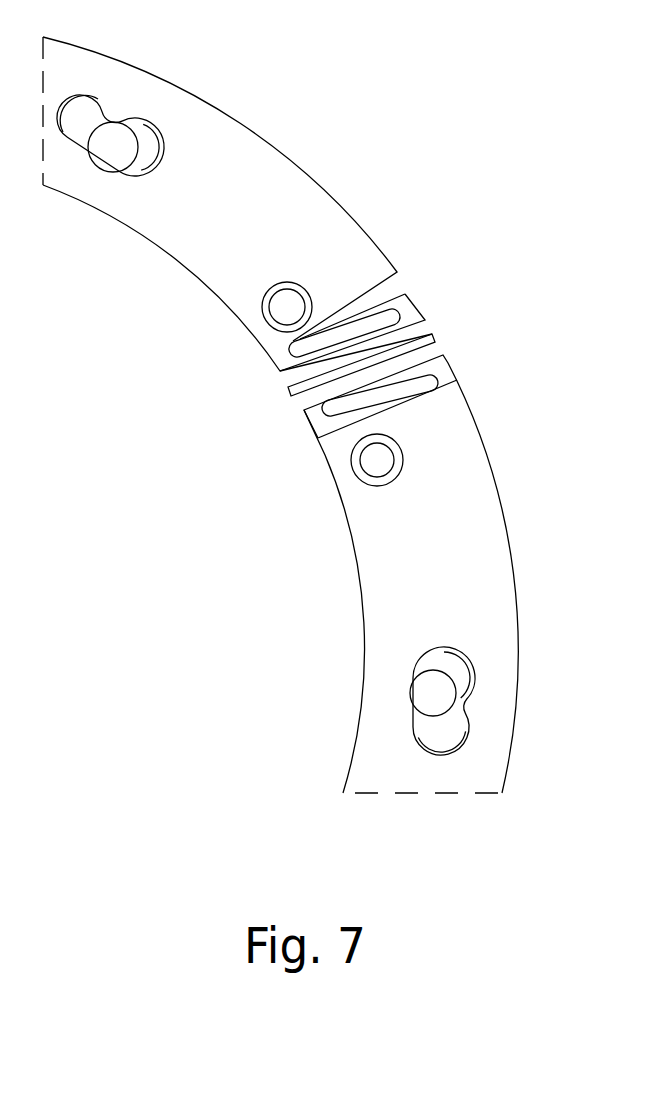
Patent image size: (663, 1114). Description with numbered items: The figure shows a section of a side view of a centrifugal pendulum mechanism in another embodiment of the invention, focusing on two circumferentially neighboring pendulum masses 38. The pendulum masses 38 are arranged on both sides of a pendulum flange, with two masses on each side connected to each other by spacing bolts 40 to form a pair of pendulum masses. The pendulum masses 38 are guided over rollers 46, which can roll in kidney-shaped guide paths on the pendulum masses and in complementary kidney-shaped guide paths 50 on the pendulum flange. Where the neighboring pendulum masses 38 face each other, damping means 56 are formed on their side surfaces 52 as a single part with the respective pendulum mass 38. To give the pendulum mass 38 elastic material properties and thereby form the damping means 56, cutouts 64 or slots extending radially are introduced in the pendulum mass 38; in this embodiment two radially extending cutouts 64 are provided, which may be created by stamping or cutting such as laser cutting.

The pendulum mass 38 is at (205, 155).
The spacing bolt 40 is at (287, 307).
The roller 46 is at (116, 133).
The kidney-shaped guide path 50 is at (85, 97).
The side surface 52 is at (380, 360).
The damping means 56 is at (407, 307).
The cutout 64 is at (412, 364).